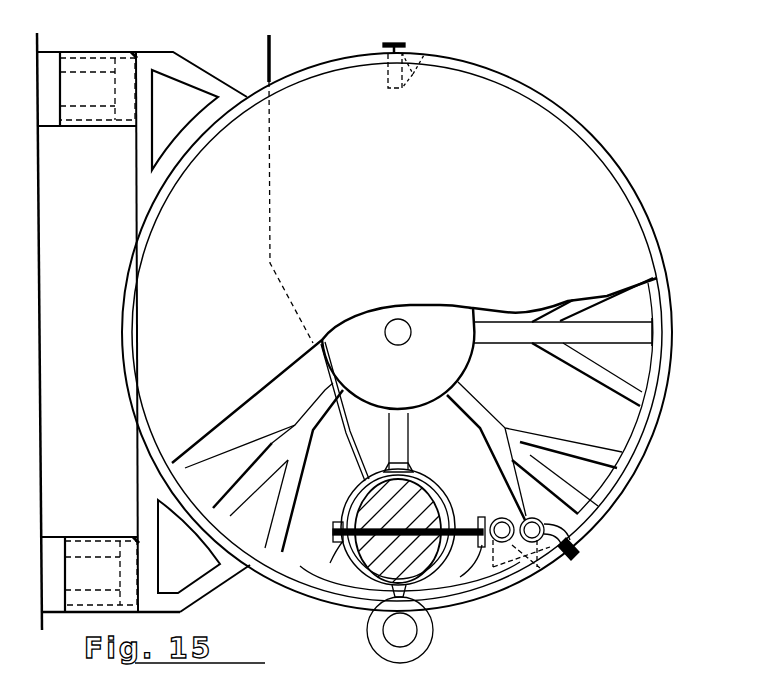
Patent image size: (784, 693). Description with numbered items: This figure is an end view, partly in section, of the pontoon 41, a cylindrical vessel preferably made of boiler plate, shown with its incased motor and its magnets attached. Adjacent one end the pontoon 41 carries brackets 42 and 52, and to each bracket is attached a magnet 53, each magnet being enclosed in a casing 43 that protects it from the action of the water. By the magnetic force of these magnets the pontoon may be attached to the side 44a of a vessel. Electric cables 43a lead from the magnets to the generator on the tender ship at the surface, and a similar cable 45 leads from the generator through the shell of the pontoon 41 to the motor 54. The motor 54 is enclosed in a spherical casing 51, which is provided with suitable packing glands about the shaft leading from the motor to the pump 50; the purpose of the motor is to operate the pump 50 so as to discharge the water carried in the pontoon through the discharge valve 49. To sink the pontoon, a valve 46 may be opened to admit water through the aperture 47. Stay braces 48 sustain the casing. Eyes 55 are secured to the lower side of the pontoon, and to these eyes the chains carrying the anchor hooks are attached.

The pontoon 41 is at (535, 96).
The bracket 42 is at (140, 155).
The casing 43 is at (93, 120).
The electric cables 43a is at (137, 55).
The side of a vessel 44a is at (40, 295).
The cable 45 is at (271, 52).
The valve 46 is at (398, 48).
The aperture 47 is at (413, 65).
The stay braces 48 is at (630, 432).
The discharge valve 49 is at (578, 555).
The pump 50 is at (520, 541).
The spherical casing 51 is at (440, 585).
The bracket 52 is at (150, 473).
The magnet 53 is at (47, 60).
The motor 54 is at (330, 563).
The eyes 55 is at (408, 650).